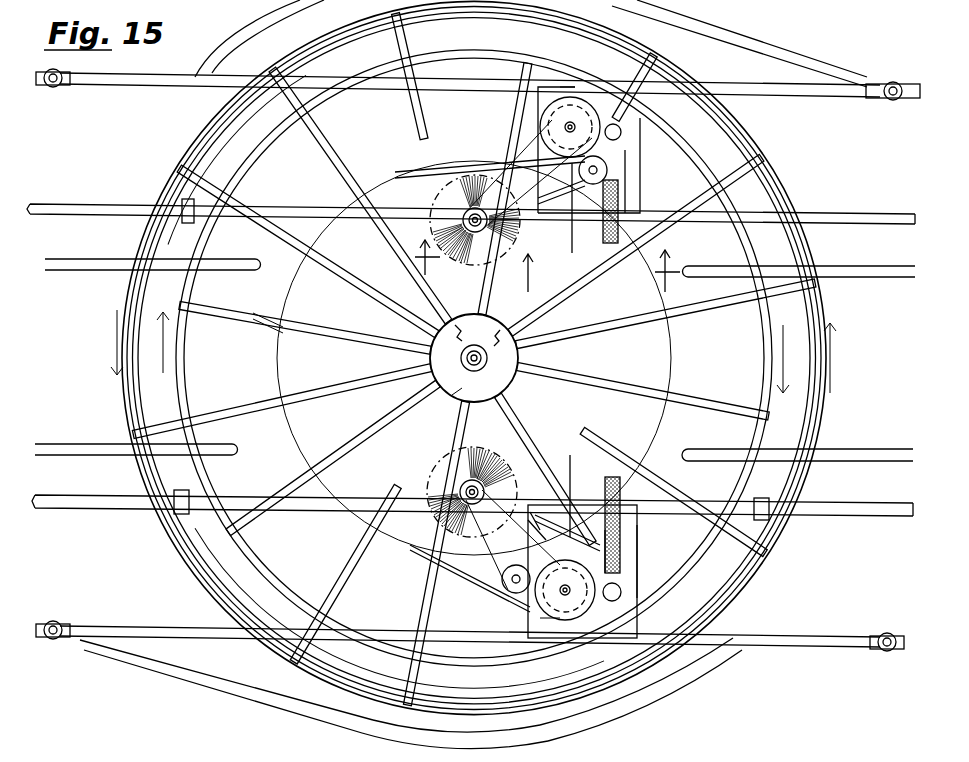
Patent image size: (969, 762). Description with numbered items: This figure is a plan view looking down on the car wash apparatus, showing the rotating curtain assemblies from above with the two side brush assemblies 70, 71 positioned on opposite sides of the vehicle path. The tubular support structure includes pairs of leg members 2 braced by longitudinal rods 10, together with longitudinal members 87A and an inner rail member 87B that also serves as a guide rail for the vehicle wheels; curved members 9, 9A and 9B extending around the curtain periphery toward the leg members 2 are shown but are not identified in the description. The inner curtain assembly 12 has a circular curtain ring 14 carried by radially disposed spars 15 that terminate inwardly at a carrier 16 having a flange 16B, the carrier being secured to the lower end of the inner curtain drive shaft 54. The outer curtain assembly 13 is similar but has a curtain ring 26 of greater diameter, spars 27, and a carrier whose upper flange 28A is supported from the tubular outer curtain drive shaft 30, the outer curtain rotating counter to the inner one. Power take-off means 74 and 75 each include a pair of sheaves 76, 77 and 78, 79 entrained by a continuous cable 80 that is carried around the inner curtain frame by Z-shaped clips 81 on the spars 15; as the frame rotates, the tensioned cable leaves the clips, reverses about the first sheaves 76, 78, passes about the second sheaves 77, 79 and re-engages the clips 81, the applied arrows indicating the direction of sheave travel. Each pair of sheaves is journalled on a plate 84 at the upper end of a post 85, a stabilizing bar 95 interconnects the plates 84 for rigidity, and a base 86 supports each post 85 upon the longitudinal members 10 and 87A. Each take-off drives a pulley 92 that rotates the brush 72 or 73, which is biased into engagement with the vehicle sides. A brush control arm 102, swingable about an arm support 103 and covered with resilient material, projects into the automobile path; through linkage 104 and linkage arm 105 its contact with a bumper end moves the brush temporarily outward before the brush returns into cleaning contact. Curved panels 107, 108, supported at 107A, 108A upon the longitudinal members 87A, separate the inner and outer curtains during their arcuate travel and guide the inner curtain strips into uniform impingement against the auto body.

The leg members 2 is at (57, 87).
The guard rail 9 is at (462, 740).
The guard rail section 9A is at (265, 35).
The guard rail section 9B is at (722, 26).
The longitudinal rods 10 is at (740, 86).
The inner curtain assembly 12 is at (712, 152).
The outer curtain assembly 13 is at (775, 157).
The curtain ring 14 is at (718, 200).
The spars 15 is at (330, 135).
The carrier 16 is at (551, 266).
The carrier flange 16B is at (452, 395).
The curtain ring 26 is at (788, 198).
The spars 27 is at (605, 45).
The upper flange 28A is at (505, 330).
The outer curtain drive shaft 30 is at (471, 366).
The inner curtain drive shaft 54 is at (484, 365).
The brush assembly 70 is at (519, 279).
The brush assembly 71 is at (500, 548).
The brush 72 is at (450, 174).
The brush 73 is at (513, 438).
The power take-off means 74 is at (534, 138).
The power take-off means 75 is at (524, 610).
The sheave 76 is at (591, 186).
The sheave 77 is at (587, 111).
The sheave 78 is at (501, 579).
The sheave 79 is at (590, 608).
The cable 80 is at (447, 162).
The Z-shaped clips 81 is at (508, 140).
The plate 84 is at (626, 172).
The post 85 is at (572, 86).
The base 86 is at (621, 137).
The longitudinal member 87A is at (80, 208).
The inner rail member 87B is at (55, 272).
The pulley 92 is at (462, 218).
The stabilizing bar 95 is at (572, 252).
The brush control arm 102 is at (606, 240).
The arm support 103 is at (621, 590).
The linkage 104 is at (560, 194).
The linkage arm 105 is at (529, 524).
The curved panel 107 is at (222, 140).
The panel support 107A is at (188, 224).
The curved panel 108 is at (330, 686).
The panel support 108A is at (195, 474).